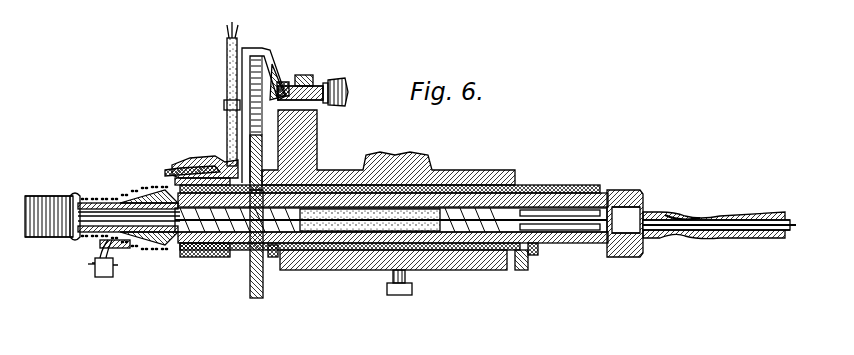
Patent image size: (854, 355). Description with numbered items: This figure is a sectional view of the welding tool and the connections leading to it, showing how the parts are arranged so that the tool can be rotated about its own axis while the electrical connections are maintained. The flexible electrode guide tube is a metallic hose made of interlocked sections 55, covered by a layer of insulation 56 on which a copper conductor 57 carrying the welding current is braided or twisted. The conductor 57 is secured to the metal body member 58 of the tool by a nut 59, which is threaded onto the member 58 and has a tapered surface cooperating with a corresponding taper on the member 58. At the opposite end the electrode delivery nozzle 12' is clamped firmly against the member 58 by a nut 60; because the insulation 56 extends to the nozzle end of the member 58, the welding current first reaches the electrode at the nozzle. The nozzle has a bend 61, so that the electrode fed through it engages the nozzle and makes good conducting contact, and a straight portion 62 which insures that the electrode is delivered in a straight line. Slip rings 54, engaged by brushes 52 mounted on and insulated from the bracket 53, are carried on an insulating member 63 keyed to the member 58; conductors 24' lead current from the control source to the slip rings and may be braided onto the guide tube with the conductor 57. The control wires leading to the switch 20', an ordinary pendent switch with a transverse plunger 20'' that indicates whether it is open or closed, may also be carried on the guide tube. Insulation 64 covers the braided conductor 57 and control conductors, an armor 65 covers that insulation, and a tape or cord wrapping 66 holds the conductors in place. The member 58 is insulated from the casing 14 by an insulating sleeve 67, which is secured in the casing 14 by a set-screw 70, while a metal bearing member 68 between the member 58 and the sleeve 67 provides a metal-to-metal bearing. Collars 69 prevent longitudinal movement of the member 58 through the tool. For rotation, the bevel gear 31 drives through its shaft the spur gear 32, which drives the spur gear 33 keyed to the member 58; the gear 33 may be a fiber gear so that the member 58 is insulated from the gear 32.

The electrode delivery nozzle 12' is at (682, 200).
The casing 14 is at (490, 268).
The switch 20' is at (98, 274).
The transverse plunger 20'' is at (71, 270).
The conductors 24' is at (206, 103).
The bevel gear 31 is at (342, 80).
The spur gear 32 is at (262, 48).
The spur gear 33 is at (258, 300).
The brushes 52 is at (188, 170).
The bracket 53 is at (280, 56).
The slip rings 54 is at (222, 262).
The interlocked sections 55 is at (118, 200).
The layer of insulation 56 is at (582, 205).
The copper conductor 57 is at (120, 250).
The metal body member 58 is at (178, 258).
The nut 59 is at (150, 262).
The nut 60 is at (630, 192).
The bend 61 is at (700, 212).
The straight portion 62 is at (752, 216).
The insulating member 63 is at (246, 272).
The insulation 64 is at (80, 196).
The armor 65 is at (40, 196).
The tape or cord wrapping 66 is at (128, 190).
The insulating sleeve 67 is at (440, 270).
The metal bearing member 68 is at (520, 268).
The collars 69 is at (535, 252).
The set-screw 70 is at (400, 295).